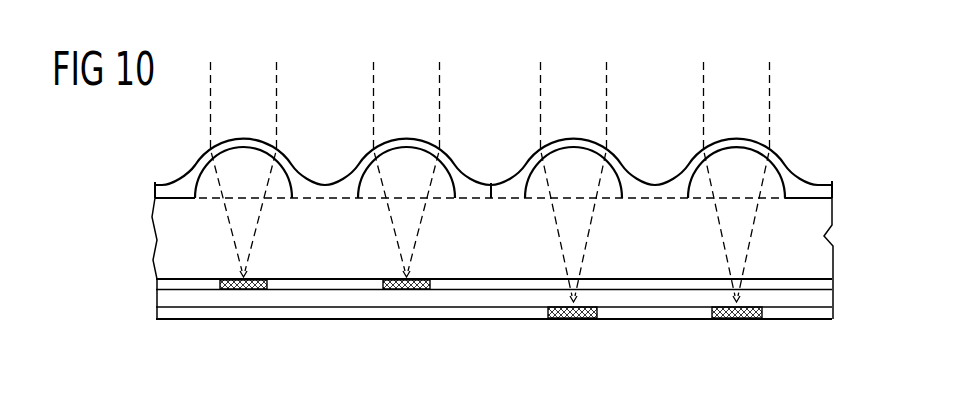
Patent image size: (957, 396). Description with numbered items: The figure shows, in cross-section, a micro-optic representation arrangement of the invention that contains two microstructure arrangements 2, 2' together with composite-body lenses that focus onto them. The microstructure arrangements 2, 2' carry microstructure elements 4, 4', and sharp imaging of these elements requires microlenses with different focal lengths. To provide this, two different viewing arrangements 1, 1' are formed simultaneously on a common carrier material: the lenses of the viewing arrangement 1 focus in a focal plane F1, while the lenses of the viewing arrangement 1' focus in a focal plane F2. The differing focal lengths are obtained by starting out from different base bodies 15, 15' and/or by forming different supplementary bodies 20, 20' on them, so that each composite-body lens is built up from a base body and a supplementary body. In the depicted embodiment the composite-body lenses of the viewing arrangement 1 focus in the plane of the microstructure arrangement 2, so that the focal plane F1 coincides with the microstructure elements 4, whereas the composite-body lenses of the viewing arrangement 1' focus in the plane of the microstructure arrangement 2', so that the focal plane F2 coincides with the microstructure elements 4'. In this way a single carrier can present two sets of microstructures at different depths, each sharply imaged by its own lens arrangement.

The viewing arrangement 1 is at (268, 170).
The viewing arrangement 1' is at (711, 182).
The microstructure arrangement 2 is at (494, 258).
The microstructure arrangement 2' is at (494, 342).
The microstructure elements 4 is at (325, 321).
The microstructure elements 4' is at (655, 343).
The base body 15 is at (390, 160).
The base body 15' is at (593, 160).
The supplementary body 20 is at (323, 159).
The supplementary body 20' is at (661, 159).
The focal plane F1 is at (132, 280).
The focal plane F2 is at (132, 309).